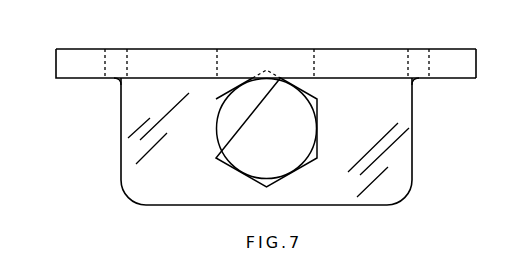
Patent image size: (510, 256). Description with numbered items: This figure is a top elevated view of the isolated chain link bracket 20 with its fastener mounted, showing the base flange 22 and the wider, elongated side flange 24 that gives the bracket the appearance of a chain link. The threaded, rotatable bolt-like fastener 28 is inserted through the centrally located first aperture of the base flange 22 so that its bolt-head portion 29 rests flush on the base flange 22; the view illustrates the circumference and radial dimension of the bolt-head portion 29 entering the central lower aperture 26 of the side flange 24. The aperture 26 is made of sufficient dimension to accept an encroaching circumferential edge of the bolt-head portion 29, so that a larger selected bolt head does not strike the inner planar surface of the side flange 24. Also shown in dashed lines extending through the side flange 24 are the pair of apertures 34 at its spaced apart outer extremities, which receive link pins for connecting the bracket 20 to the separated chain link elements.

The chain link bracket 20 is at (140, 65).
The base flange 22 is at (387, 98).
The side flange 24 is at (463, 53).
The aperture 26 is at (313, 58).
The bolt-like fastener 28 is at (236, 103).
The bolt-head portion 29 is at (270, 147).
The side flange apertures 34 is at (106, 60).